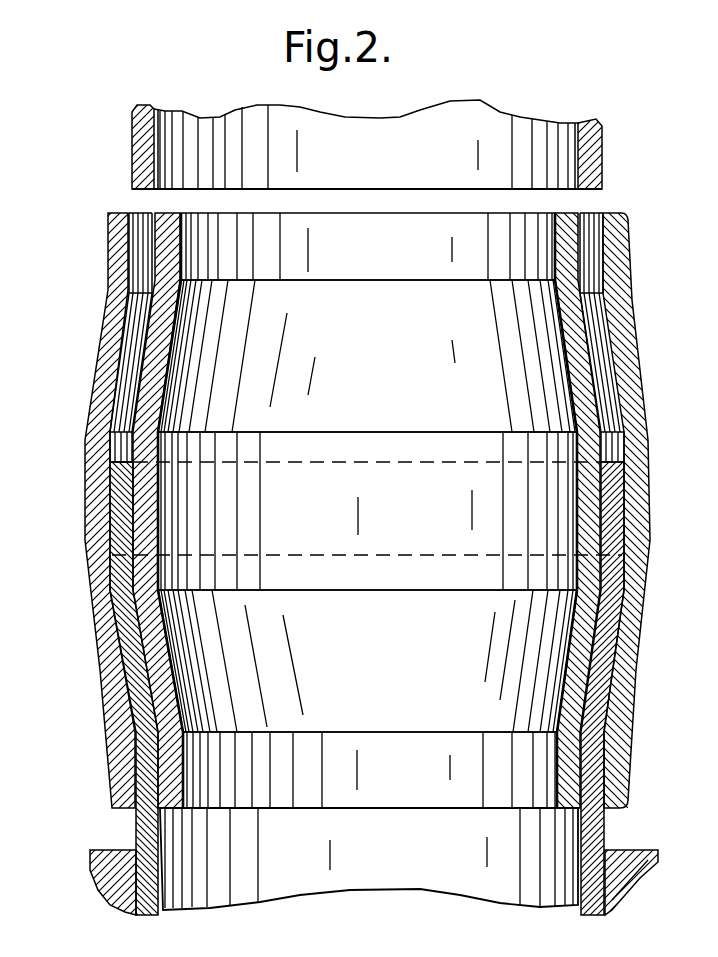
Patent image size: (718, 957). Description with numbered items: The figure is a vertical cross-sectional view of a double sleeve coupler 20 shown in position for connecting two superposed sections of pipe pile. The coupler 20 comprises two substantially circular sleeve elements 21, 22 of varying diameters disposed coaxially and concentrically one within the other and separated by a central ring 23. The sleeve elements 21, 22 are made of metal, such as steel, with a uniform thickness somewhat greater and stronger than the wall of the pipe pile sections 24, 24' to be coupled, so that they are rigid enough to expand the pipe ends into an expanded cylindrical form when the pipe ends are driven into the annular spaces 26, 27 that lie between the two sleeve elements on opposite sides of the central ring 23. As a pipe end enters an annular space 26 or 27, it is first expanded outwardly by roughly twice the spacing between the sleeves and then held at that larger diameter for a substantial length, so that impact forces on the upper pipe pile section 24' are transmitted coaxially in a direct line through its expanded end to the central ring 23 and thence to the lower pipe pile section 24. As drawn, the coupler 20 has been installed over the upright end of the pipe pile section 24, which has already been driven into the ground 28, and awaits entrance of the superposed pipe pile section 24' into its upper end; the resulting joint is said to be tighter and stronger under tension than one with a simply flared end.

The coupler 20 is at (105, 259).
The sleeve element 21 is at (572, 224).
The sleeve element 22 is at (624, 246).
The central ring 23 is at (648, 484).
The pipe pile section 24 is at (100, 889).
The pipe pile section 24' is at (329, 144).
The annular space 26 is at (142, 752).
The annular space 27 is at (122, 375).
The ground 28 is at (627, 845).